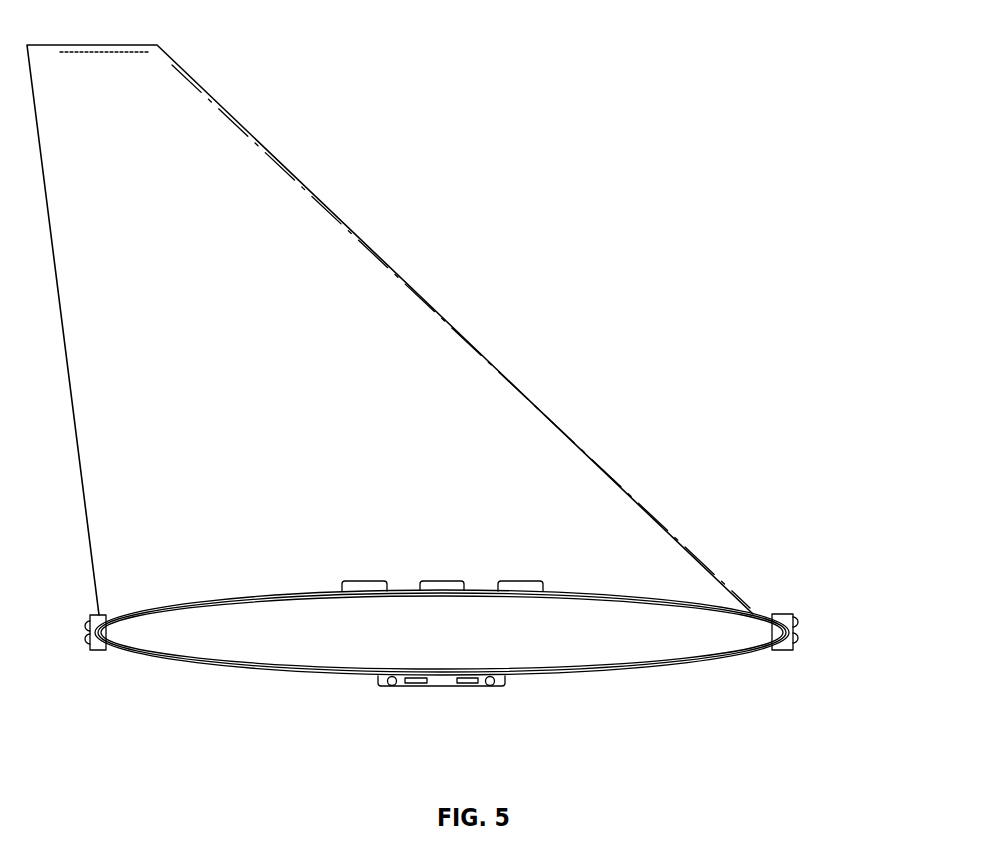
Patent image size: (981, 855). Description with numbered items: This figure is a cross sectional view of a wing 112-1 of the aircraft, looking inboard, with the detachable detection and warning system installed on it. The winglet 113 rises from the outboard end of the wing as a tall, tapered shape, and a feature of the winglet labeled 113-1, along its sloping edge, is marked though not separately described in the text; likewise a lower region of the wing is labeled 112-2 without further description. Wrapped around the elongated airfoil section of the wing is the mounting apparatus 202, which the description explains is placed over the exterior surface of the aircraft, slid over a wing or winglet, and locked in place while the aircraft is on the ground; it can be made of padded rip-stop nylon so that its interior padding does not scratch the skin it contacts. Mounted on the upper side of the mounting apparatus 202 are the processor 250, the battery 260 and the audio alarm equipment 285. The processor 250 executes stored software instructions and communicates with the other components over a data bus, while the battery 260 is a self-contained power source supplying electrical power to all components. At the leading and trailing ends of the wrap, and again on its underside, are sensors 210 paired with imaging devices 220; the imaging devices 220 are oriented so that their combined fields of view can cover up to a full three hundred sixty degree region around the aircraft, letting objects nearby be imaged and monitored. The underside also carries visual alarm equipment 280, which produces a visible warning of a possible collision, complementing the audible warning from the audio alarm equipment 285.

The winglet 113 is at (128, 45).
The mirror edge 113-1 is at (348, 294).
The mounting apparatus 202 is at (613, 593).
The wing 112-1 is at (295, 596).
The lens lower surface 112-2 is at (278, 670).
The processor 250 is at (363, 580).
The battery 260 is at (440, 580).
The audio alarm equipment 285 is at (521, 580).
The sensor 210 is at (88, 624).
The imaging device 220 is at (88, 641).
The visual alarm equipment 280 is at (392, 686).